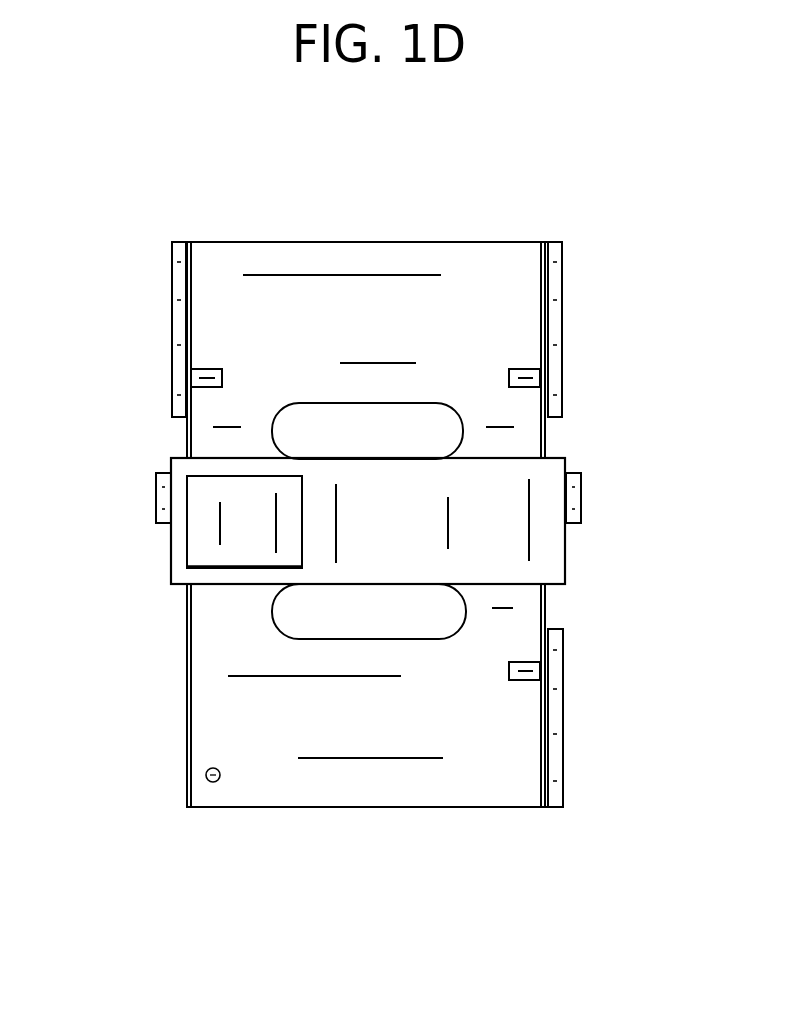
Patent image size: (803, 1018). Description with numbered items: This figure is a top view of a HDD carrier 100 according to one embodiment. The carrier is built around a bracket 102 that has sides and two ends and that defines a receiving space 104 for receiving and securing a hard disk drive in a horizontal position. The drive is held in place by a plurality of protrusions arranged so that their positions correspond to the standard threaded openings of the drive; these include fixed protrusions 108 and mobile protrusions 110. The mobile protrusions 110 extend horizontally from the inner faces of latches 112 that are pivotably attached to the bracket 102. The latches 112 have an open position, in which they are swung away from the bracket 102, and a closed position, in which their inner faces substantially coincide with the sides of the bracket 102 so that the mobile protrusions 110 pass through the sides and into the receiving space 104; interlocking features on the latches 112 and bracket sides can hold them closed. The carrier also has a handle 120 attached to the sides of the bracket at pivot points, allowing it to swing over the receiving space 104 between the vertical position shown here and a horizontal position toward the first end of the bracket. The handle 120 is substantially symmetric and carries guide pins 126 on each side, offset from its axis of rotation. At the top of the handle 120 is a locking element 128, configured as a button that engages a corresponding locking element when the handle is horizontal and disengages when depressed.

The HDD carrier 100 is at (580, 194).
The bracket 102 is at (181, 692).
The receiving space 104 is at (373, 770).
The fixed protrusions 108 is at (222, 780).
The mobile protrusions 110 is at (223, 374).
The latches 112 is at (172, 308).
The handle 120 is at (567, 463).
The guide pins 126 is at (156, 500).
The locking element 128 is at (200, 545).